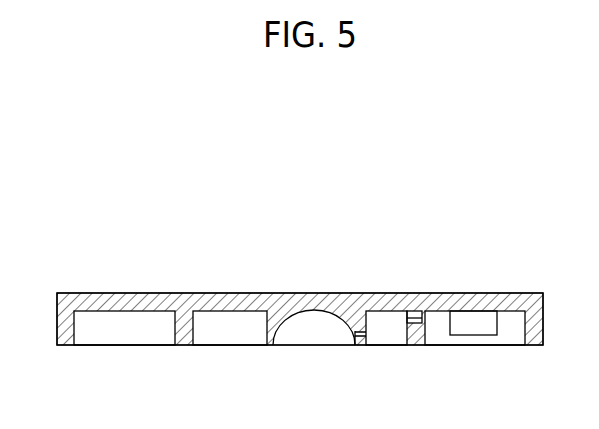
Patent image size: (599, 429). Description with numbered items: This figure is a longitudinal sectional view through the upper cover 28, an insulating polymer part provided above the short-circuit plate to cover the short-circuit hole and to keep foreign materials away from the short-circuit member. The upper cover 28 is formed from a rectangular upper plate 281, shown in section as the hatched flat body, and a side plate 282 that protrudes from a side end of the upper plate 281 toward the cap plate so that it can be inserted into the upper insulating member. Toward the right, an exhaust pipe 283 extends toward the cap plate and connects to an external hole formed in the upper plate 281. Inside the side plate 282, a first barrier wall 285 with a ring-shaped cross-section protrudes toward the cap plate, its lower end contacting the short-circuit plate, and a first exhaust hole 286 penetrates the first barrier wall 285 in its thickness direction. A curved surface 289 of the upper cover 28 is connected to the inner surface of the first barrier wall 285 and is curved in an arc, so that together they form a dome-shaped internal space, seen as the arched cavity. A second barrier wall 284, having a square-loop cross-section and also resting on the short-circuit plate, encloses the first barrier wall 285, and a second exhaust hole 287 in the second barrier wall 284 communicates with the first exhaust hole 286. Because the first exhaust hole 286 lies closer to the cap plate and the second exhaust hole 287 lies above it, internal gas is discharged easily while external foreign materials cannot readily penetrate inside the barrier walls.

The upper cover 28 is at (301, 186).
The upper plate 281 is at (143, 293).
The side plate 282 is at (57, 334).
The exhaust pipe 283 is at (497, 330).
The second barrier wall 284 is at (175, 333).
The first barrier wall 285 is at (368, 311).
The first exhaust hole 286 is at (357, 332).
The second exhaust hole 287 is at (413, 318).
The curved surface 289 is at (293, 316).